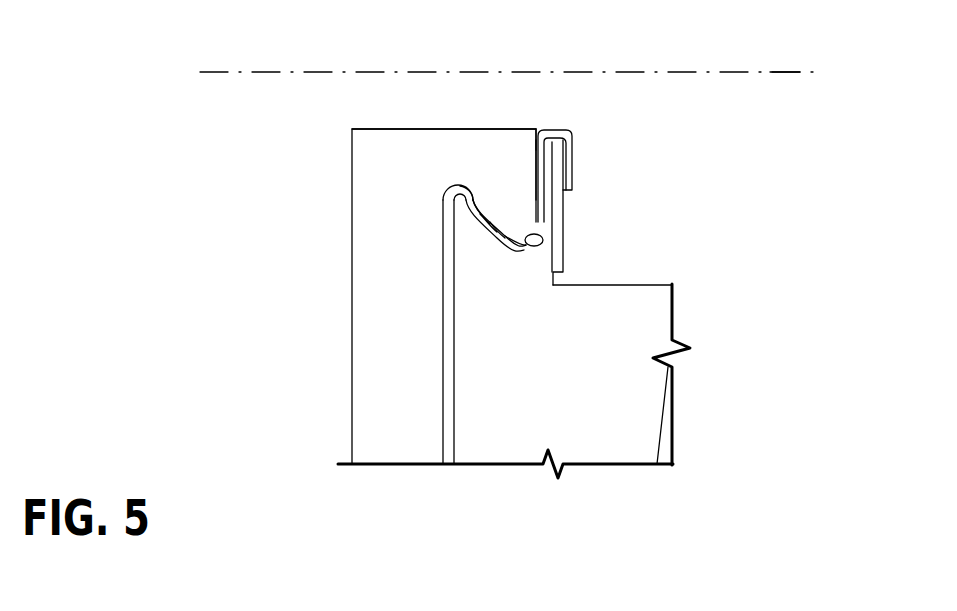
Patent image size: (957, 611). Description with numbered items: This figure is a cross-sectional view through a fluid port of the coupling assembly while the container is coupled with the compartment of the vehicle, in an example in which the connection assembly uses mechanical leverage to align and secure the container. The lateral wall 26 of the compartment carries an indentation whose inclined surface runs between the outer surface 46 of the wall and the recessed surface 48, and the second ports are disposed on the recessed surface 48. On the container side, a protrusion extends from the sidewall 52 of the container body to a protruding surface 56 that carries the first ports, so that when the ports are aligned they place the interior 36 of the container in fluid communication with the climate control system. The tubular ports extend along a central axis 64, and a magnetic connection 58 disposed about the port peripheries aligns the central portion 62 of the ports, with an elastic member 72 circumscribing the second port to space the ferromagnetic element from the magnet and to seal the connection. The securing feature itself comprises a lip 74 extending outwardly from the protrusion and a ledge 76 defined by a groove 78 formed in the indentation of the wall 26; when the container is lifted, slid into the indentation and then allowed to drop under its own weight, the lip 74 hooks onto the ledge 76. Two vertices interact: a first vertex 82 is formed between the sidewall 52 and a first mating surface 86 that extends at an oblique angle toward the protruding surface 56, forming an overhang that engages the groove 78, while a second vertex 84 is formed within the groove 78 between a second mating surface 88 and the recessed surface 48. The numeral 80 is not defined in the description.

The lateral wall 26 is at (577, 381).
The interior 36 is at (249, 195).
The outer surface 46 is at (454, 405).
The recessed surface 48 is at (552, 150).
The sidewall 52 is at (391, 318).
The protruding surface 56 is at (540, 141).
The magnetic connection 58 is at (538, 118).
The central portion 62 is at (391, 57).
The central axis 64 is at (777, 73).
The elastic member 72 is at (548, 172).
The lip 74 is at (522, 222).
The ledge 76 is at (462, 213).
The groove 78 is at (543, 238).
The engagement point 80 is at (523, 262).
The first vertex 82 is at (472, 196).
The second vertex 84 is at (478, 216).
The first mating surface 86 is at (488, 226).
The second mating surface 88 is at (498, 196).